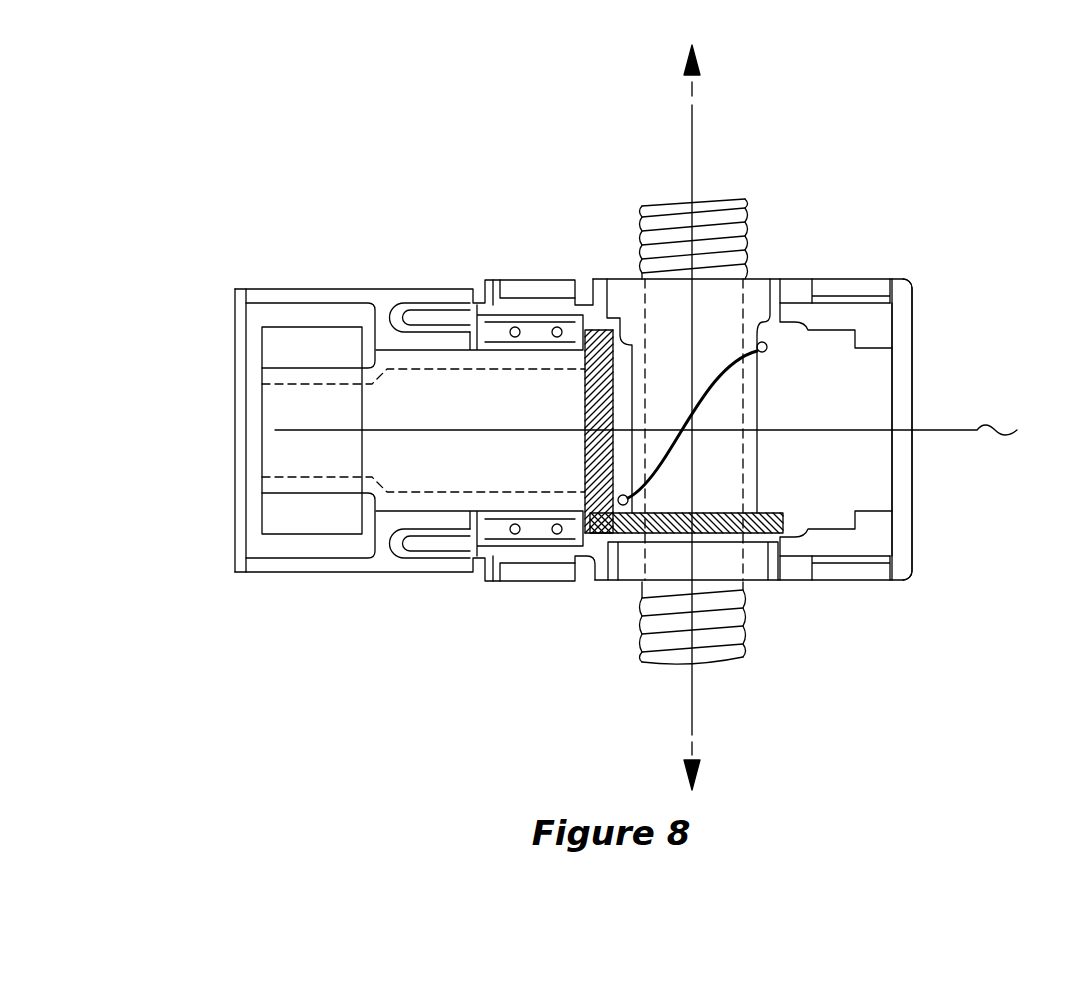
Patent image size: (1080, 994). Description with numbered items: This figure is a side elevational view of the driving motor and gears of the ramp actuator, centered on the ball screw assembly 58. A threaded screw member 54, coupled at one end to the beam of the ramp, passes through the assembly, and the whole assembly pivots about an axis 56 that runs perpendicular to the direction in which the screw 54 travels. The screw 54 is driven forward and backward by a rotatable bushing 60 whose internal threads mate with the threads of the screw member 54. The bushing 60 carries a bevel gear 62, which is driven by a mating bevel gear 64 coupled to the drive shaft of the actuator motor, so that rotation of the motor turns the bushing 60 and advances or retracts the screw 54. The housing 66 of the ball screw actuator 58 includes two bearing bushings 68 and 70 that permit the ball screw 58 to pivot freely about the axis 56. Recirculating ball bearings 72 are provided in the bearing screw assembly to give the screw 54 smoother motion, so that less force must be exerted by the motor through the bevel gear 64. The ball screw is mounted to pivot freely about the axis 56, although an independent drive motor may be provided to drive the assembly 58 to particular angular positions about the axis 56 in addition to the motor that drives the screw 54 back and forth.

The threaded screw member 54 is at (726, 649).
The axis 56 is at (275, 430).
The ball screw assembly 58 is at (797, 222).
The rotatable bushing 60 is at (620, 584).
The bevel gear 62 is at (776, 515).
The bevel gear 64 is at (582, 324).
The housing 66 is at (884, 506).
The bearing bushing 68 is at (836, 302).
The bearing bushing 70 is at (512, 279).
The recirculating ball bearings 72 is at (766, 350).